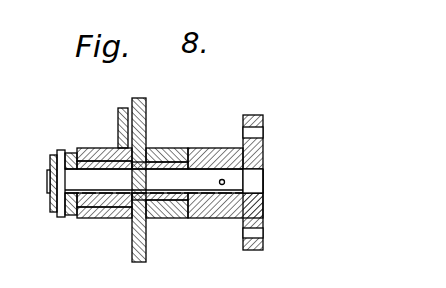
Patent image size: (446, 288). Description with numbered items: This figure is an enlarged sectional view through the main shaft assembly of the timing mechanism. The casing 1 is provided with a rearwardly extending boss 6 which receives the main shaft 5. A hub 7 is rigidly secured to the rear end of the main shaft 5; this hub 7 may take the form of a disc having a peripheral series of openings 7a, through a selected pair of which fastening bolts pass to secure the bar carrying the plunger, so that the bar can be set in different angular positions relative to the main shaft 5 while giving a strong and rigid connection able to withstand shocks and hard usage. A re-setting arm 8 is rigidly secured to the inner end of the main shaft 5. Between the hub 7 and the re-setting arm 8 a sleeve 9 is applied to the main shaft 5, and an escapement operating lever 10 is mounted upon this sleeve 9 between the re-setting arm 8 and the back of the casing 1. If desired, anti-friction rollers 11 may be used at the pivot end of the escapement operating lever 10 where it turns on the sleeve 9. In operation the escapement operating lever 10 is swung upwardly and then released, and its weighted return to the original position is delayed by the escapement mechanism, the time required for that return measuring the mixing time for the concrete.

The casing 1 is at (144, 107).
The main shaft 5 is at (178, 181).
The boss 6 is at (172, 218).
The hub 7 is at (256, 116).
The openings 7a is at (263, 132).
The re-setting arm 8 is at (53, 155).
The sleeve 9 is at (93, 150).
The escapement operating lever 10 is at (108, 218).
The anti-friction rollers 11 is at (79, 217).